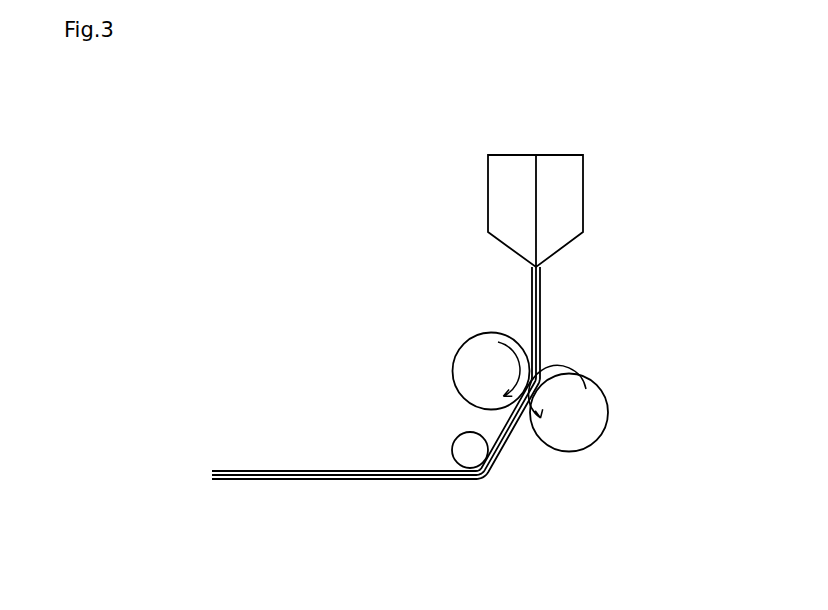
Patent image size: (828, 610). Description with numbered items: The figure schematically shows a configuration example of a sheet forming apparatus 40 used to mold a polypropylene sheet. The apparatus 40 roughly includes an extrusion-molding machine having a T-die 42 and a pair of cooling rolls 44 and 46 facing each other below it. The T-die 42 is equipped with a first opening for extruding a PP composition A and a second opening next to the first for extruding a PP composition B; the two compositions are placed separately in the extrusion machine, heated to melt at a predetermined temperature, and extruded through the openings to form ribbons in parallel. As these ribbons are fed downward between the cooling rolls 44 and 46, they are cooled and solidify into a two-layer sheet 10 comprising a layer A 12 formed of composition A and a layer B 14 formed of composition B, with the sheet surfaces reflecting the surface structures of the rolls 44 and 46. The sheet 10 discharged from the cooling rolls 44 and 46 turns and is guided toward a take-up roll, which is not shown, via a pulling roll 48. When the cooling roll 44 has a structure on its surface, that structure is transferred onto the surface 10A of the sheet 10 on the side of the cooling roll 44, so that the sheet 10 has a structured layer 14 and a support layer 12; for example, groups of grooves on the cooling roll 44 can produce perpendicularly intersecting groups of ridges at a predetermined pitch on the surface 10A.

The two-layer PP sheet 10 is at (371, 494).
The surface of the PP sheet 10A is at (333, 470).
The layer A 12 is at (233, 481).
The layer B 14 is at (233, 471).
The sheet forming apparatus 40 is at (660, 151).
The T-die 42 is at (495, 195).
The cooling roll 44 is at (468, 375).
The cooling roll 46 is at (592, 430).
The pulling roll 48 is at (458, 450).